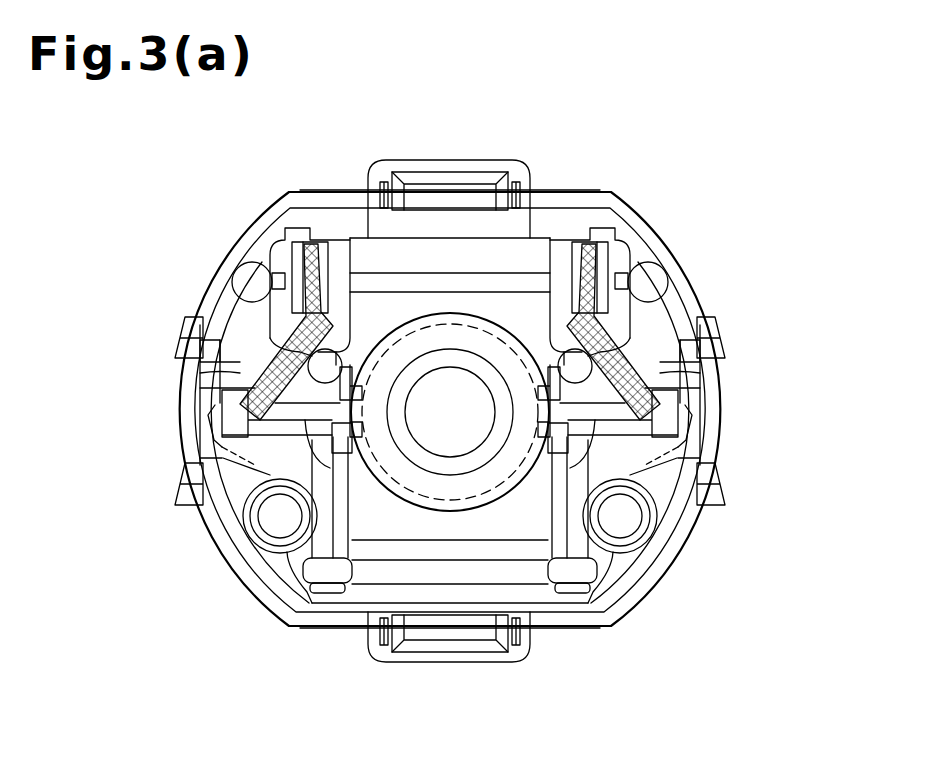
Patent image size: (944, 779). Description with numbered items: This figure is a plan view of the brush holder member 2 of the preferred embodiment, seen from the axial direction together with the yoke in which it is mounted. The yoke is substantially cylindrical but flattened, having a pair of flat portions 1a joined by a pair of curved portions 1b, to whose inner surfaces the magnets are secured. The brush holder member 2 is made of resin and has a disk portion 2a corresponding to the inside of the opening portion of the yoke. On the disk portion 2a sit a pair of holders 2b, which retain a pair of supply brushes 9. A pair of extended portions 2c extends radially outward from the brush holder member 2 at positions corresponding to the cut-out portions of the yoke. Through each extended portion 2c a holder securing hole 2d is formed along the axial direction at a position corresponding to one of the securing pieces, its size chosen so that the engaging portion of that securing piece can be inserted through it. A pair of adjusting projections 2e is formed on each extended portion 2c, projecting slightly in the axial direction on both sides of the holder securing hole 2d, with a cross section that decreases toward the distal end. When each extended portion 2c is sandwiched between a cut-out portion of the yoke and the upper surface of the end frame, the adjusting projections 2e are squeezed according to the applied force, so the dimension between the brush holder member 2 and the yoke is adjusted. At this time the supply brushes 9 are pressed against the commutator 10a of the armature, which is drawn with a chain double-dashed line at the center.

The flat portion 1a is at (526, 176).
The curved portion 1b is at (208, 300).
The brush holder member 2 is at (784, 282).
The disk portion 2a is at (650, 590).
The holder 2b is at (200, 384).
The extended portion 2c is at (478, 192).
The holder securing hole 2d is at (432, 195).
The adjusting projection 2e is at (380, 192).
The supply brush 9 is at (450, 516).
The commutator 10a is at (438, 330).